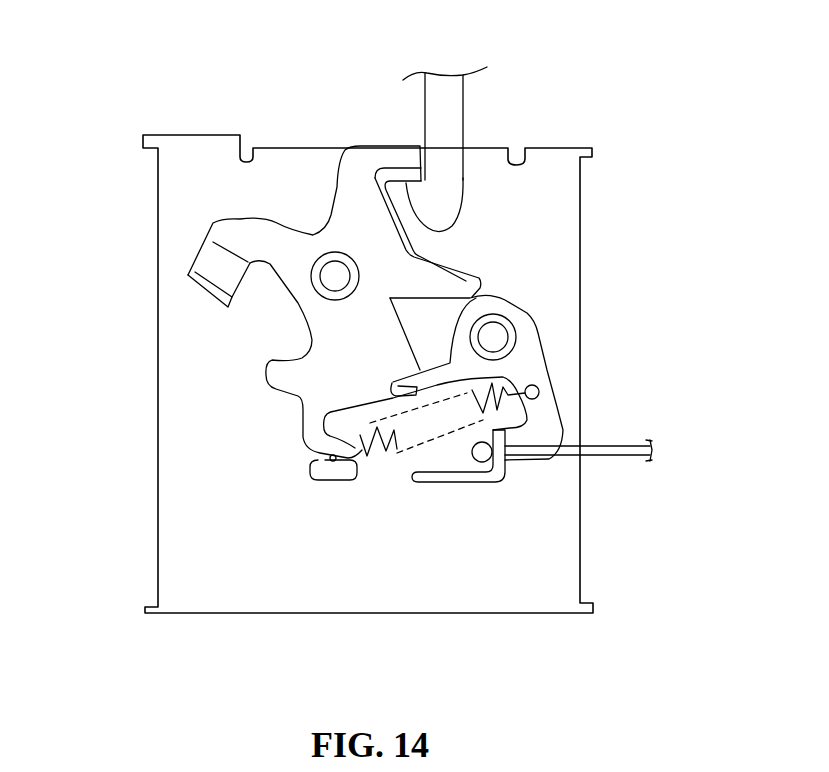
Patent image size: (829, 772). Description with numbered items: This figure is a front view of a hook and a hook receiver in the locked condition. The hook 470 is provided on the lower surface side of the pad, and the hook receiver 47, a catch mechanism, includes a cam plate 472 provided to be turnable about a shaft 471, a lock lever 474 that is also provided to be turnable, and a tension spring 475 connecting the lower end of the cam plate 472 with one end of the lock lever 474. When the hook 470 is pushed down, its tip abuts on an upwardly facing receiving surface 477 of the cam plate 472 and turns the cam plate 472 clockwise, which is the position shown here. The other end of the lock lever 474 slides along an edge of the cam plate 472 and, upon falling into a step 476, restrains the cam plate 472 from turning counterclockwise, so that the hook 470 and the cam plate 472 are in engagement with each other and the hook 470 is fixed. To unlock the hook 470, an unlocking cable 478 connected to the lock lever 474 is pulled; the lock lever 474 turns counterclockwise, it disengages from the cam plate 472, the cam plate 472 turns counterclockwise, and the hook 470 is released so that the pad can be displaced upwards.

The hook receiver 47 is at (162, 120).
The hook 470 is at (458, 110).
The shaft 471 is at (327, 277).
The cam plate 472 is at (276, 245).
The lock lever 474 is at (493, 337).
The tension spring 475 is at (368, 463).
The step 476 is at (419, 398).
The receiving surface 477 is at (456, 278).
The unlocking cable 478 is at (613, 456).